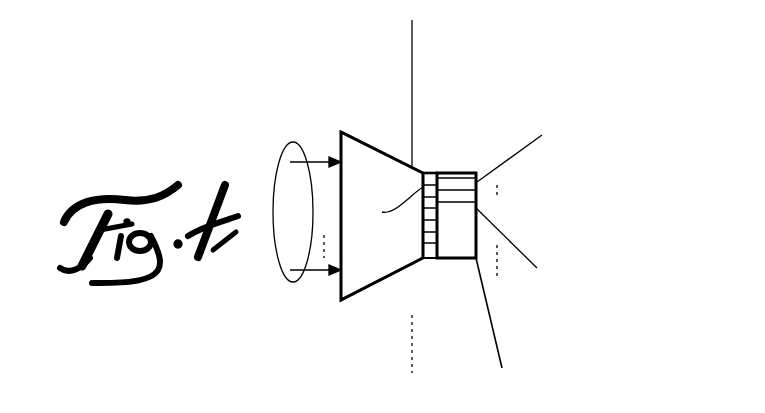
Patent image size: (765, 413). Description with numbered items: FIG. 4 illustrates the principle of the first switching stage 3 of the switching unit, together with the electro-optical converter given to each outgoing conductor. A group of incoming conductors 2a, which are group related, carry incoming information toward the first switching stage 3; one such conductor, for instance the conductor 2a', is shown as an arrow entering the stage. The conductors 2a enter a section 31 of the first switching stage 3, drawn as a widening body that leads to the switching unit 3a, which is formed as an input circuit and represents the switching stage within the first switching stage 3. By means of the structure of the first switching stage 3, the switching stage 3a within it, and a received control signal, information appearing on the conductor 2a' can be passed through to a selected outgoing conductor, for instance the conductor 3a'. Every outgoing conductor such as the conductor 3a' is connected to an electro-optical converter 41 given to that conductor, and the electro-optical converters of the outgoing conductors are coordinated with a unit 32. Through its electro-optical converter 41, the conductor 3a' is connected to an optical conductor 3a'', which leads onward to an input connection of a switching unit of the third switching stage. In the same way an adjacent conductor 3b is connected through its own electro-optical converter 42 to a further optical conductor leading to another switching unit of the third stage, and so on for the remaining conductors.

The first switching stage 3 is at (365, 88).
The prism 31 is at (347, 282).
The switching unit 3a is at (448, 273).
The outgoing conductor 3a' is at (463, 120).
The optical conductor 3a'' is at (555, 158).
The unit 32 is at (457, 250).
The electro-optical converter 41 is at (462, 160).
The electro-optical converter 42 is at (465, 185).
The lower output beam boundary 3b is at (510, 233).
The incoming conductors 2a is at (287, 255).
The incoming conductor 2a' is at (284, 183).